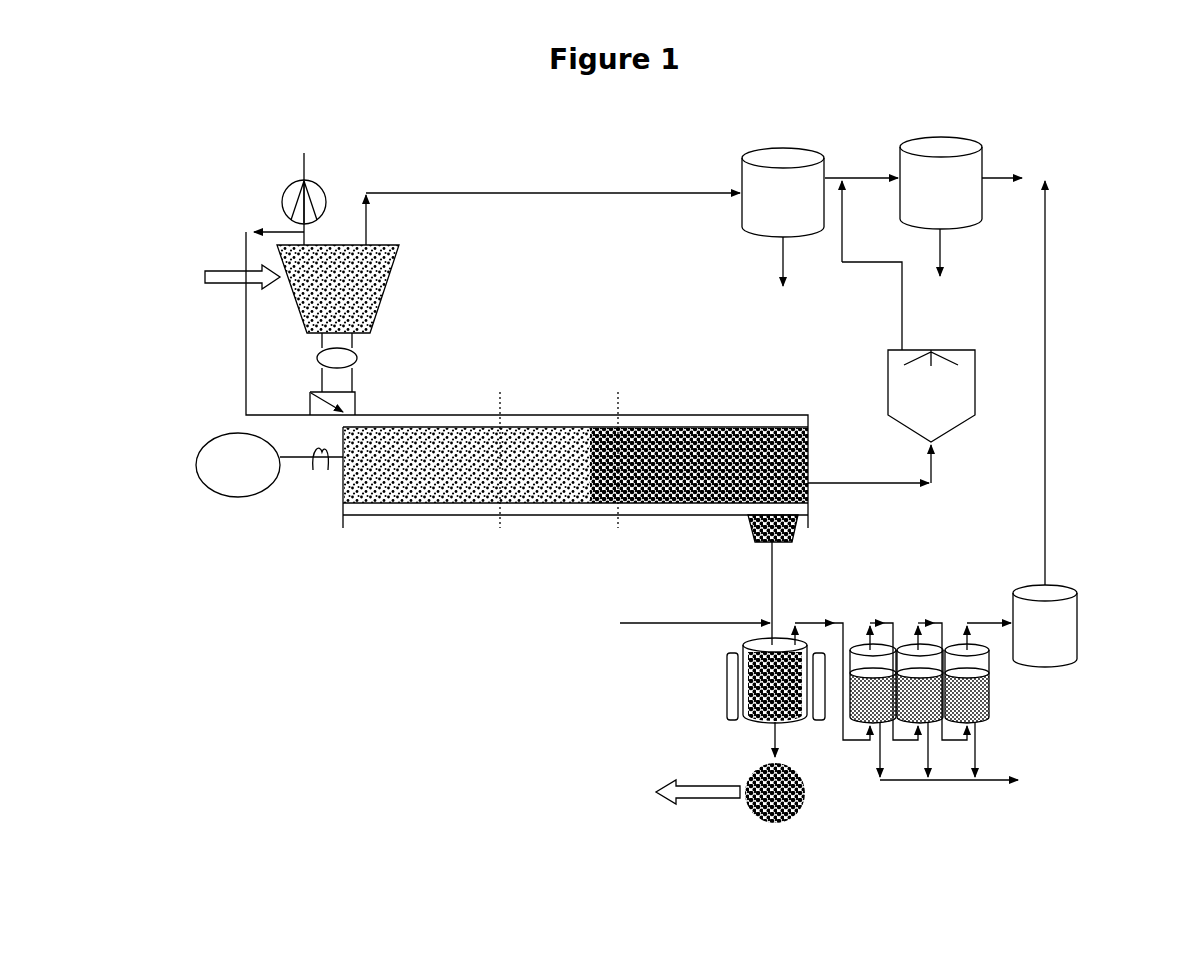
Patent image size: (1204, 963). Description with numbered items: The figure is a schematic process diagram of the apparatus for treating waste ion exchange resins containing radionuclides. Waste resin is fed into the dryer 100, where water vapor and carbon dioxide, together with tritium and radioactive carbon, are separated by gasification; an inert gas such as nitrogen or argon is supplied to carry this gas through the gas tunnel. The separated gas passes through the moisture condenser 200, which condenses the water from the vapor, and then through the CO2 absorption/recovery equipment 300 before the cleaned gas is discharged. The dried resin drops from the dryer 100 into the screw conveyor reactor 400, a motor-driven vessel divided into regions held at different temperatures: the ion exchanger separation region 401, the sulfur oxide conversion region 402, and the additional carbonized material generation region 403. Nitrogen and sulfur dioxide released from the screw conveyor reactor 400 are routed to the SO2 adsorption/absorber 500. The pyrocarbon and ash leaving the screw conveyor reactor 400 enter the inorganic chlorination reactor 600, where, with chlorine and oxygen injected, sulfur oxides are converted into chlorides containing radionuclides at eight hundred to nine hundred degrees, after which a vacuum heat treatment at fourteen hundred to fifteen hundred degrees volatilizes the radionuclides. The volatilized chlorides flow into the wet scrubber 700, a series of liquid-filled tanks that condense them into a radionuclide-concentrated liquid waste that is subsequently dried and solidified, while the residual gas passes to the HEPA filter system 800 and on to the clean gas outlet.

The dryer 100 is at (385, 296).
The moisture condenser 200 is at (800, 257).
The CO2 absorption/recovery equipment 300 is at (1000, 231).
The screw conveyor reactor 400 is at (593, 511).
The ion exchanger separation region 401 is at (422, 484).
The sulfur oxide conversion region 402 is at (559, 484).
The carbonized material generation region 403 is at (713, 484).
The SO2 adsorption/absorber 500 is at (931, 396).
The inorganic chlorination reactor 600 is at (752, 648).
The wet scrubber 700 is at (990, 683).
The HEPA filter system 800 is at (1045, 424).